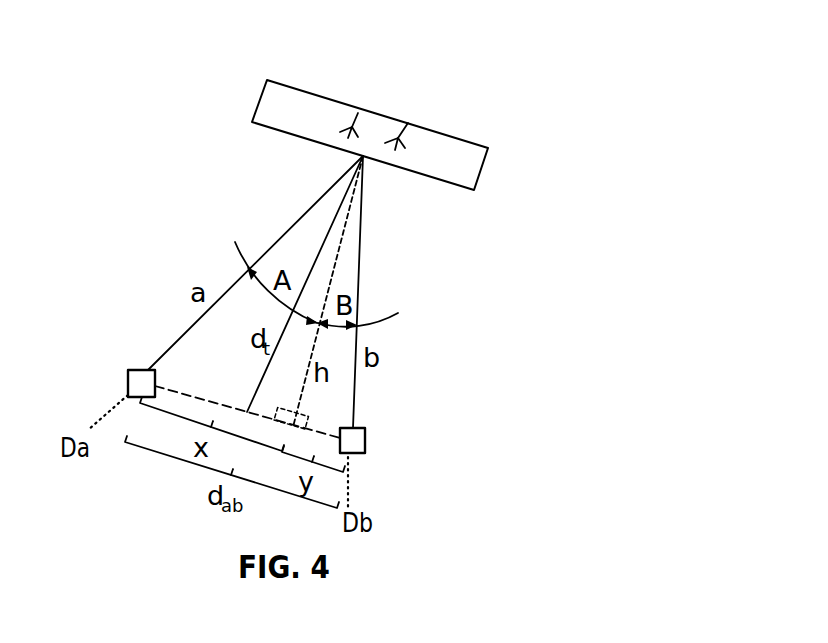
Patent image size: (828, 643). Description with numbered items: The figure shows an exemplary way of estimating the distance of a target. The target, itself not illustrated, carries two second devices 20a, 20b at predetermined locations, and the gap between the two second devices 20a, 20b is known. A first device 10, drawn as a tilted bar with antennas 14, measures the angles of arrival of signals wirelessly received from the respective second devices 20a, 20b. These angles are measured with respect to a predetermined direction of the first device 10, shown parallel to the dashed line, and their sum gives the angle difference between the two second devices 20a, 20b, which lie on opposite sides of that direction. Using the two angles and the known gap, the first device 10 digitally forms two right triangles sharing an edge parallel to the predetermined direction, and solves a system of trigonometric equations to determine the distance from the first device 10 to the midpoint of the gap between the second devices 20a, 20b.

The first device 10 is at (270, 108).
The antennas 14 is at (399, 106).
The second device 20a is at (142, 382).
The second device 20b is at (353, 443).